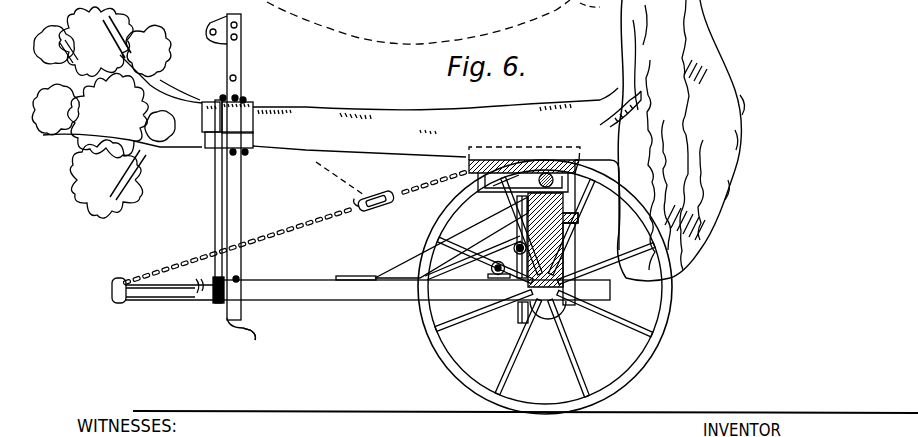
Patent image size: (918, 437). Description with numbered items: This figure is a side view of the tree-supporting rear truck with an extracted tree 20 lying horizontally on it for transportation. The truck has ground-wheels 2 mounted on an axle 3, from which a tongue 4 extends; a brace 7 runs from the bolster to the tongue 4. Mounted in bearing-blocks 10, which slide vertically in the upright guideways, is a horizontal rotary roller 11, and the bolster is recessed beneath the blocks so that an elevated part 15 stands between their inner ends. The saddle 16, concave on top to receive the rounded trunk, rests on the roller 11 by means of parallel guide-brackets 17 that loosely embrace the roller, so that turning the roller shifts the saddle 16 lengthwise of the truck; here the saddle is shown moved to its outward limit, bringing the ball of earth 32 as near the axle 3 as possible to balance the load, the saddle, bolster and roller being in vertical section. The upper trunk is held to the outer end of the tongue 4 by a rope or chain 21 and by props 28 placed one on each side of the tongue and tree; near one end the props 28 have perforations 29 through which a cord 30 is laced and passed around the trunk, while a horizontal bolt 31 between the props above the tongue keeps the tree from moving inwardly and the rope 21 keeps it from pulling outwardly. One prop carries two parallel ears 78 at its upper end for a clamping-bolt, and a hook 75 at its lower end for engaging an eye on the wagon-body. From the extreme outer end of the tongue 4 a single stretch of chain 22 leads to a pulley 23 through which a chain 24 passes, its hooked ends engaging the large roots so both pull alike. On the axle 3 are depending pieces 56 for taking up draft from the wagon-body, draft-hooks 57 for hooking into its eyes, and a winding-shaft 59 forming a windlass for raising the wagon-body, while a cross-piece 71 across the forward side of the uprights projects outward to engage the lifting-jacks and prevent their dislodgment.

The ground-wheels 2 is at (453, 362).
The axle 3 is at (550, 277).
The tongue 4 is at (390, 297).
The brace 7 is at (414, 258).
The bearing-blocks 10 is at (578, 184).
The roller 11 is at (548, 172).
The elevated part 15 is at (517, 212).
The saddle 16 is at (469, 165).
The guide-brackets 17 is at (482, 180).
The tree 20 is at (398, 112).
The rope or chain 21 is at (220, 210).
The stretch of chain 22 is at (303, 222).
The pulley 23 is at (376, 196).
The chain 24 is at (416, 197).
The props 28 is at (238, 64).
The perforations 29 is at (230, 78).
The cord 30 is at (244, 103).
The bolt 31 is at (240, 278).
The ball of earth 32 is at (717, 128).
The depending pieces 56 is at (522, 320).
The draft-hooks 57 is at (514, 248).
The winding-shaft 59 is at (490, 268).
The cross-piece 71 is at (578, 222).
The hook 75 is at (252, 338).
The ears 78 is at (213, 20).